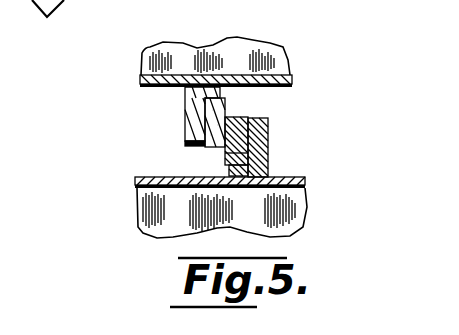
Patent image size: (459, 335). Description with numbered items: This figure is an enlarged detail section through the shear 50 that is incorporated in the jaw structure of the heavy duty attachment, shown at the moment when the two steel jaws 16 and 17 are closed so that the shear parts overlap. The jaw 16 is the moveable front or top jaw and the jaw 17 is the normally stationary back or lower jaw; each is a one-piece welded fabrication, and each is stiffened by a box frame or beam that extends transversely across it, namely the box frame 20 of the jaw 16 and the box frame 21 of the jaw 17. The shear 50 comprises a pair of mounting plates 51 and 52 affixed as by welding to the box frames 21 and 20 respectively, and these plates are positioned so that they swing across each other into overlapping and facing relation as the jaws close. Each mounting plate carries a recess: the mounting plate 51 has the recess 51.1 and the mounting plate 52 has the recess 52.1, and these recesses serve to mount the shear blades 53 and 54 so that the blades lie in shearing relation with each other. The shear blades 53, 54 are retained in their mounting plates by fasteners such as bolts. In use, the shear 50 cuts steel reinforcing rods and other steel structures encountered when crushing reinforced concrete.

The jaw 16 is at (150, 202).
The jaw 17 is at (183, 53).
The jaw box frame 20 is at (305, 180).
The jaw box frame 21 is at (141, 79).
The shear 50 is at (278, 113).
The mounting plate 51 is at (183, 119).
The recess 51.1 is at (185, 145).
The mounting plate 52 is at (268, 138).
The recess 52.1 is at (268, 122).
The shear blade 53 is at (206, 104).
The shear blade 54 is at (268, 155).